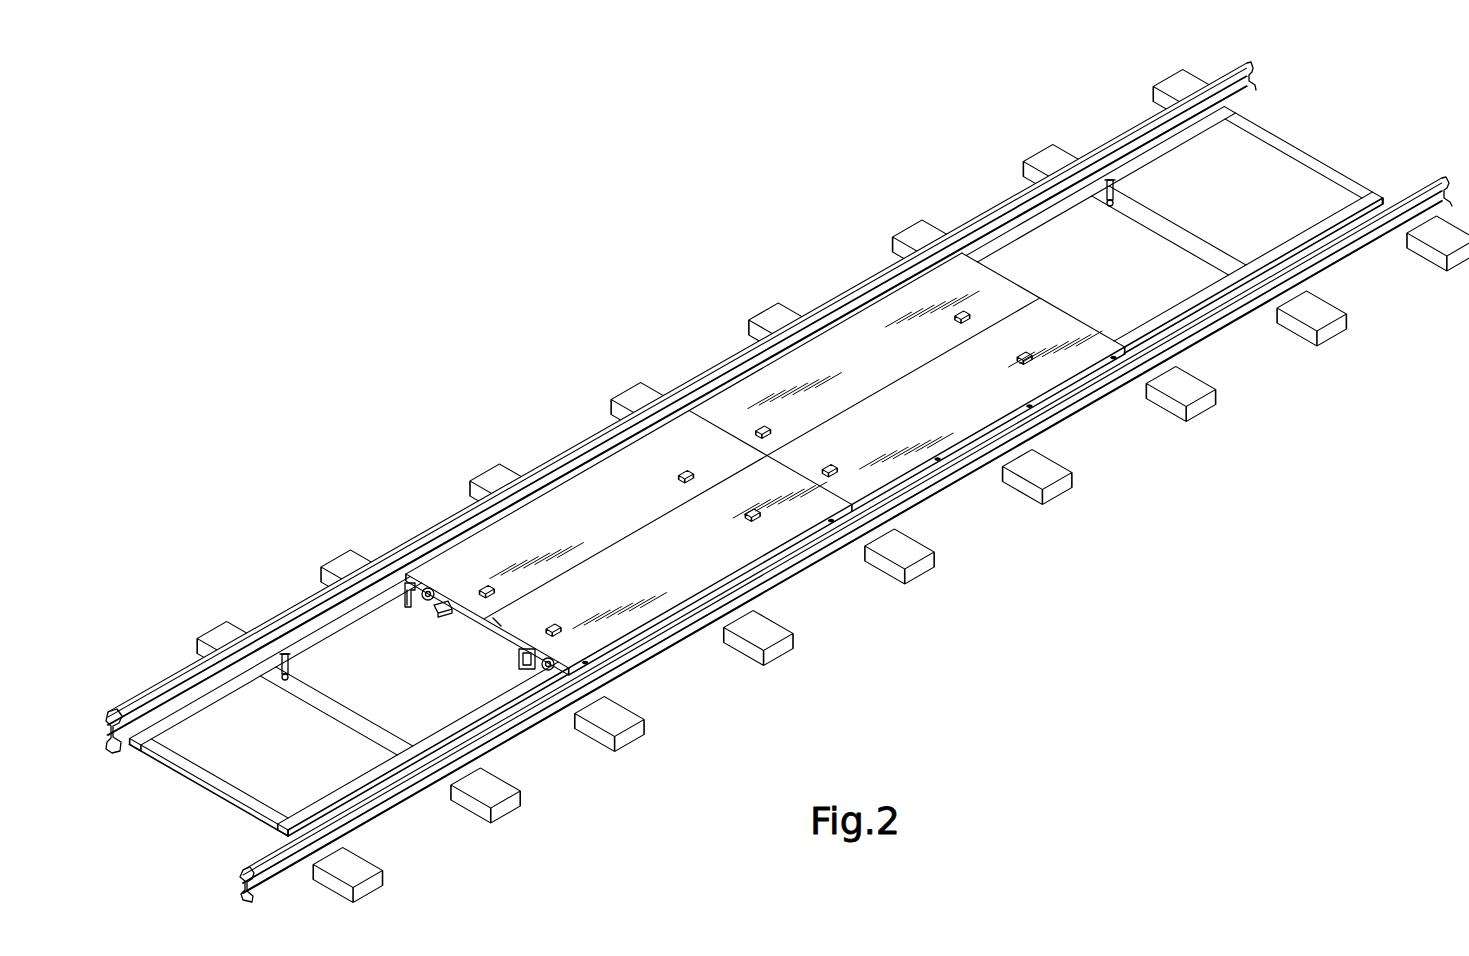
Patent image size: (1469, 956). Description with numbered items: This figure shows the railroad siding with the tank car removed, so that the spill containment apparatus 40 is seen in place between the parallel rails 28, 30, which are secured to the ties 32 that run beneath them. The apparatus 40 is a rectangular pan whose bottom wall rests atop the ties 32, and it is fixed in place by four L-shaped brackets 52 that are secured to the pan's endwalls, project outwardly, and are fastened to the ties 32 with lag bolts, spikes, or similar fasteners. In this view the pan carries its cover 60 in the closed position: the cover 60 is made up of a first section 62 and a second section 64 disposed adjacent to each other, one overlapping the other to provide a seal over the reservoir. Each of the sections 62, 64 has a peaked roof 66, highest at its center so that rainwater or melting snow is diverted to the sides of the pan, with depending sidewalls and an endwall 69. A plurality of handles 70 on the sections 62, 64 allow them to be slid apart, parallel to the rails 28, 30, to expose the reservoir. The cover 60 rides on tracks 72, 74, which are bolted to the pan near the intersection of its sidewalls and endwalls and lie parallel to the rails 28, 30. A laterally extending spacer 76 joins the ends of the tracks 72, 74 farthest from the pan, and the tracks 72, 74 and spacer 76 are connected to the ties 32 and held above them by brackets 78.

The rail 28 is at (1205, 340).
The rail 30 is at (1007, 203).
The ties 32 is at (1032, 149).
The spill containment apparatus 40 is at (755, 481).
The L-shaped brackets 52 is at (427, 607).
The cover 60 is at (767, 464).
The first section 62 is at (712, 558).
The second section 64 is at (978, 403).
The peaked roof 66 is at (944, 423).
The endwall 69 is at (495, 624).
The handles 70 is at (955, 313).
The track 72 is at (1297, 245).
The track 74 is at (1157, 157).
The spacer 76 is at (1283, 148).
The brackets 78 is at (290, 677).